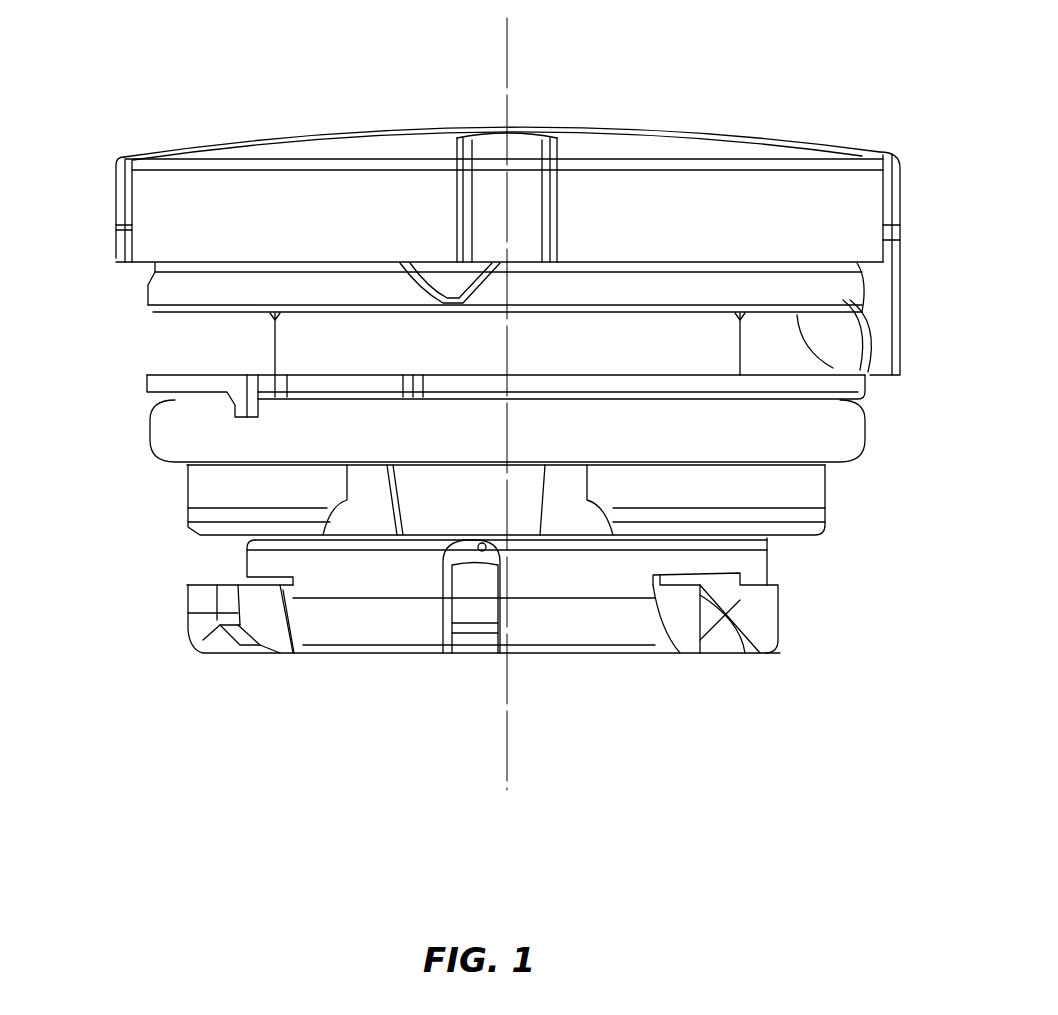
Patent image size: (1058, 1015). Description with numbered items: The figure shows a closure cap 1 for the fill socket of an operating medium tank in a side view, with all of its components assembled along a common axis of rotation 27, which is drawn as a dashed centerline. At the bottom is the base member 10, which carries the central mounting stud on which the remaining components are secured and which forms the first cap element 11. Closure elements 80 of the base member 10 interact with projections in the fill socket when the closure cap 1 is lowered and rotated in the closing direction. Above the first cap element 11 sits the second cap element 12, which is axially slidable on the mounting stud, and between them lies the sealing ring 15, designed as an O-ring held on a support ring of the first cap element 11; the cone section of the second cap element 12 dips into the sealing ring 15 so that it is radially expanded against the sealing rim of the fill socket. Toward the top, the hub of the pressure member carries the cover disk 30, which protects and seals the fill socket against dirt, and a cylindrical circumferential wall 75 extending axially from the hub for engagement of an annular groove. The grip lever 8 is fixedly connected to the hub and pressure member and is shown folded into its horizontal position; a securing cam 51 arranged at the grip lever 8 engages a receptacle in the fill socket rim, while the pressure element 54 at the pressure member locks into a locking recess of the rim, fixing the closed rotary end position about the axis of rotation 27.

The closure cap 1 is at (117, 128).
The grip lever 8 is at (790, 135).
The base member 10 is at (190, 553).
The first cap element 11 is at (818, 490).
The second cap element 12 is at (848, 386).
The sealing ring 15 is at (848, 440).
The axis of rotation 27 is at (507, 63).
The cover disk 30 is at (453, 163).
The securing cam 51 is at (885, 328).
The pressure element 54 is at (442, 280).
The circumferential wall 75 is at (298, 342).
The closure elements 80 is at (750, 603).